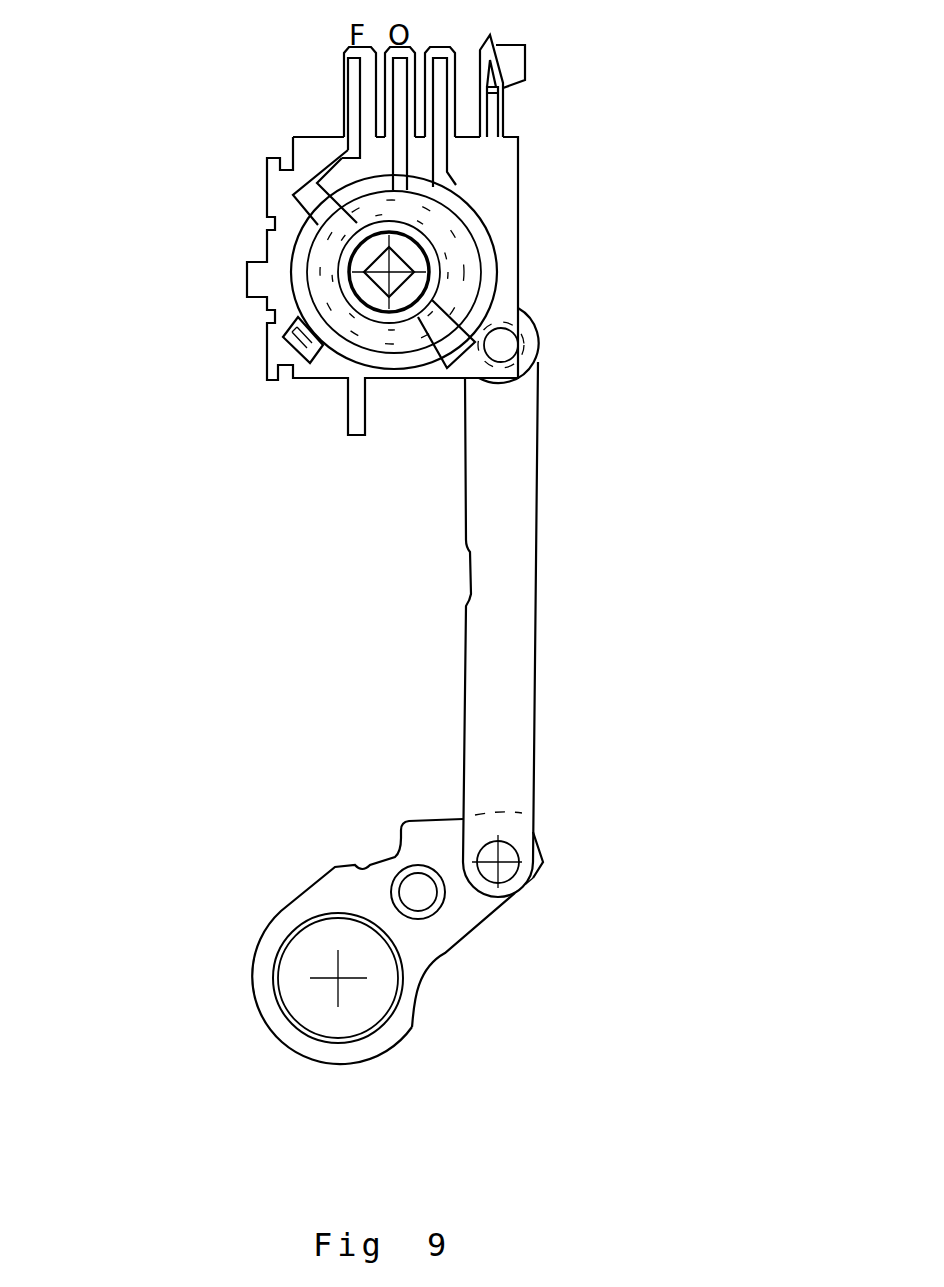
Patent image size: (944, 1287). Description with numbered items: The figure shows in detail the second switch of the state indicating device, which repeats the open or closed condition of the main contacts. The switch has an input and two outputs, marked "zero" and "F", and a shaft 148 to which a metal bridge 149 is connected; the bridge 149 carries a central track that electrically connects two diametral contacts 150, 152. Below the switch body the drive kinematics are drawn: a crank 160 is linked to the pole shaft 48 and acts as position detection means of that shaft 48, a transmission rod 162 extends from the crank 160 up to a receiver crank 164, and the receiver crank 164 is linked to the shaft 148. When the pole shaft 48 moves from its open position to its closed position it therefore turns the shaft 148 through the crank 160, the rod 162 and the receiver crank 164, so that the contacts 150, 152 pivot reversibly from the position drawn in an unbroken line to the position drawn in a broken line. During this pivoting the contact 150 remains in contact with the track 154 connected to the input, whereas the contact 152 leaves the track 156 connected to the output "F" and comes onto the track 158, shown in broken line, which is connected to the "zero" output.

The pole shaft 48 is at (232, 964).
The shaft 148 is at (276, 272).
The metal bridge 149 is at (567, 255).
The contact 150 is at (600, 427).
The contact 152 is at (206, 197).
The track 154 is at (608, 139).
The track 156 is at (207, 108).
The track 158 is at (213, 373).
The crank 160 is at (517, 938).
The transmission rod 162 is at (623, 629).
The receiver crank 164 is at (630, 340).